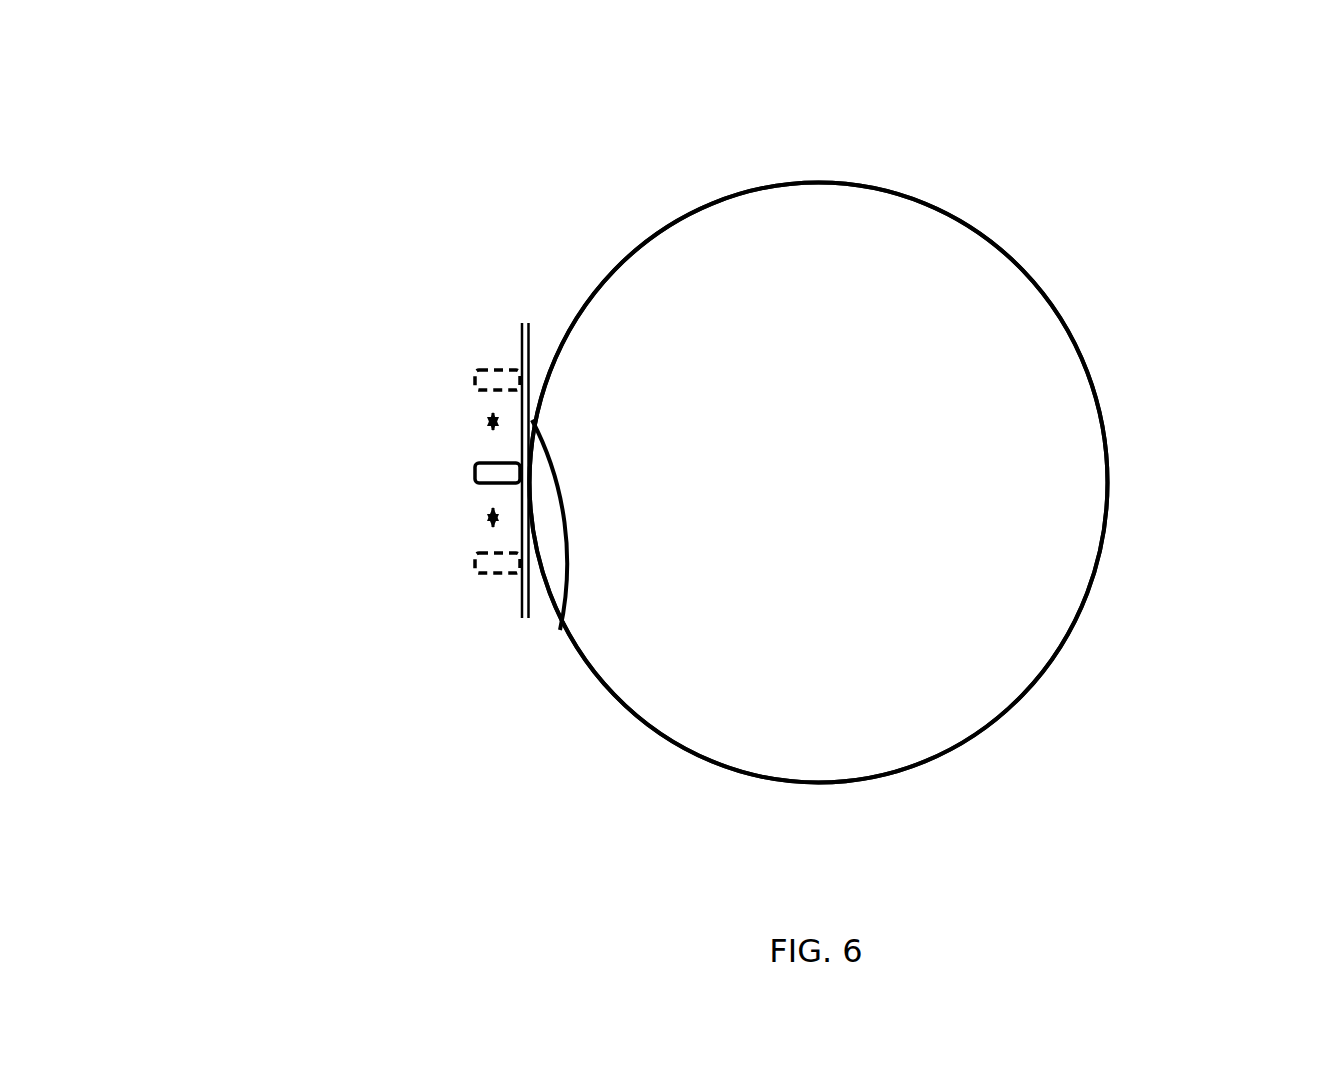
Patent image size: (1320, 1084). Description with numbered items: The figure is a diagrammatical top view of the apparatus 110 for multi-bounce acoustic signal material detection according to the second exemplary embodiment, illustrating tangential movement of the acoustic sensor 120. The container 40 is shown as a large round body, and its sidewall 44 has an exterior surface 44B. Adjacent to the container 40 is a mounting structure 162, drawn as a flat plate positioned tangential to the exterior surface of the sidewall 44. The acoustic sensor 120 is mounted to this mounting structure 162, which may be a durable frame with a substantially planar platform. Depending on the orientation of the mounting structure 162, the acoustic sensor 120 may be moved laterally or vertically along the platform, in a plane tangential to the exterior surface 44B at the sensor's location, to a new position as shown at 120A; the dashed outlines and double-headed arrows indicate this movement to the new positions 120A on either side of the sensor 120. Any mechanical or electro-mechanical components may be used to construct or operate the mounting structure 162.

The deposition system 110 is at (272, 144).
The container 40 is at (1150, 368).
The sidewall 44 is at (1005, 252).
The exterior surface 44B is at (558, 630).
The mounting structure 162 is at (528, 350).
The acoustic sensor 120 is at (474, 469).
The new position of acoustic sensor 120A is at (472, 378).